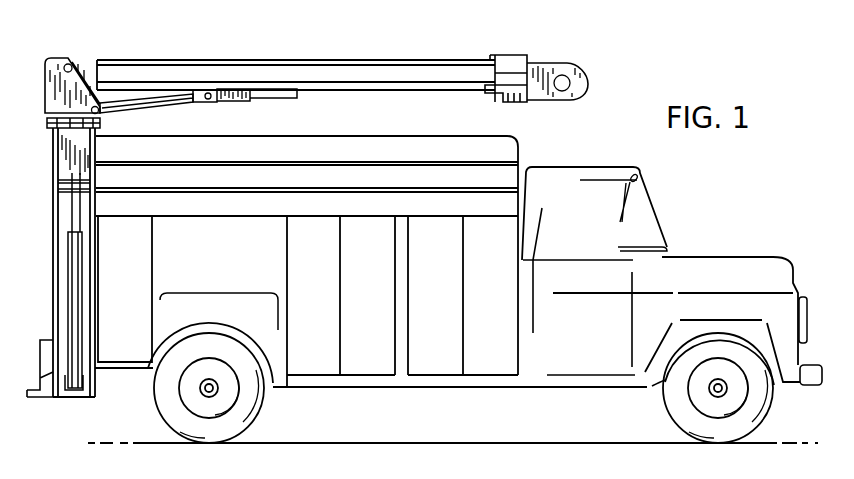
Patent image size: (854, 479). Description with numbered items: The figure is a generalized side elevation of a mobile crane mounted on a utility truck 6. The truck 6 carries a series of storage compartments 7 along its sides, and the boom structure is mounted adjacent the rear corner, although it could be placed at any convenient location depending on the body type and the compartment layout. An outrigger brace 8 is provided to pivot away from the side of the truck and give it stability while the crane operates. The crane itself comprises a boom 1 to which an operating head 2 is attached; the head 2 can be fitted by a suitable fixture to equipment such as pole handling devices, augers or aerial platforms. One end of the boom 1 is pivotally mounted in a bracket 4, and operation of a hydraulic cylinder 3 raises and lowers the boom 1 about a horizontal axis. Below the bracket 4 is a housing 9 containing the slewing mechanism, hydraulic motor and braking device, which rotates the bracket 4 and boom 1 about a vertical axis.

The boom 1 is at (398, 58).
The operating head 2 is at (565, 98).
The hydraulic cylinder 3 is at (198, 113).
The bracket 4 is at (52, 78).
The utility truck 6 is at (680, 243).
The storage compartments 7 is at (493, 296).
The outrigger brace 8 is at (70, 390).
The housing 9 is at (72, 148).